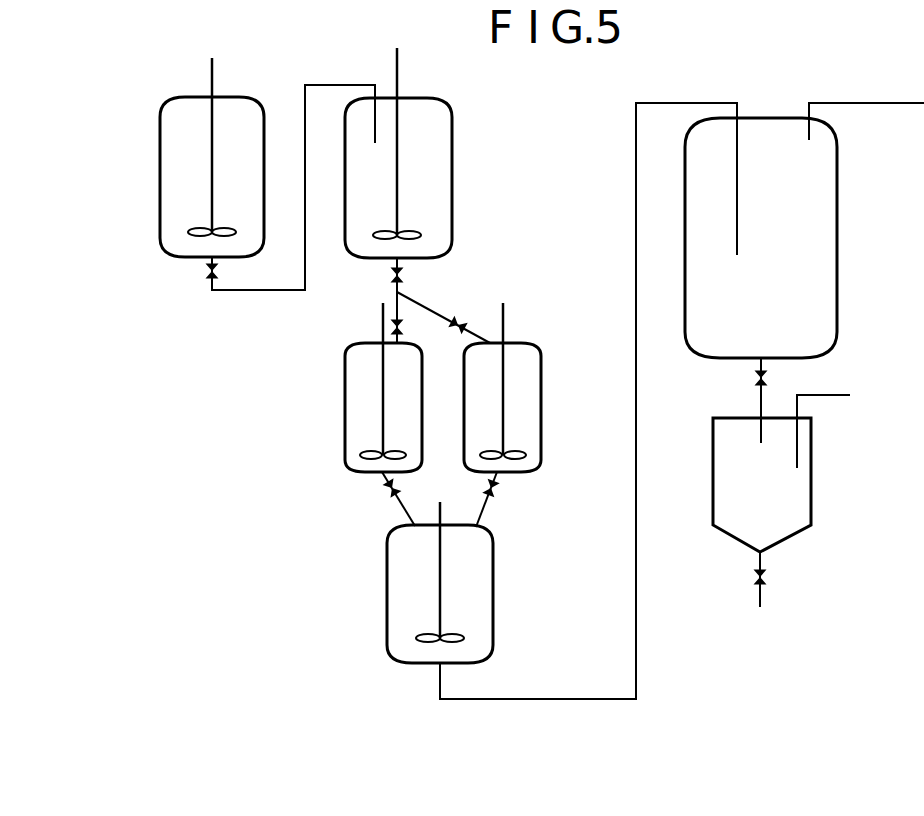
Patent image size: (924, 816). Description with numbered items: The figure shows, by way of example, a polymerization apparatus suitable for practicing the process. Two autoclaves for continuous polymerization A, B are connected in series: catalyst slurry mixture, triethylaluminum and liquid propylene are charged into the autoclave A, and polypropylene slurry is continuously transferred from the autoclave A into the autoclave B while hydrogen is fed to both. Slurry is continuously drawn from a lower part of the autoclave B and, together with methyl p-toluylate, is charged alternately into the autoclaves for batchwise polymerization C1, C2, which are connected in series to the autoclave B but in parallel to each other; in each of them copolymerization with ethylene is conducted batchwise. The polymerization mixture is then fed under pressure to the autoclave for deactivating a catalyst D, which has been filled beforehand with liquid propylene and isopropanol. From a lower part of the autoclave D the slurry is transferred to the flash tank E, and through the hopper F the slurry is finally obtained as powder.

The autoclave for continuous polymerization A is at (160, 217).
The autoclave for continuous polymerization B is at (452, 218).
The autoclave for batchwise polymerization C1 is at (345, 434).
The autoclave for batchwise polymerization C2 is at (541, 437).
The autoclave for deactivating a catalyst D is at (387, 608).
The flash tank E is at (837, 288).
The hopper F is at (811, 482).